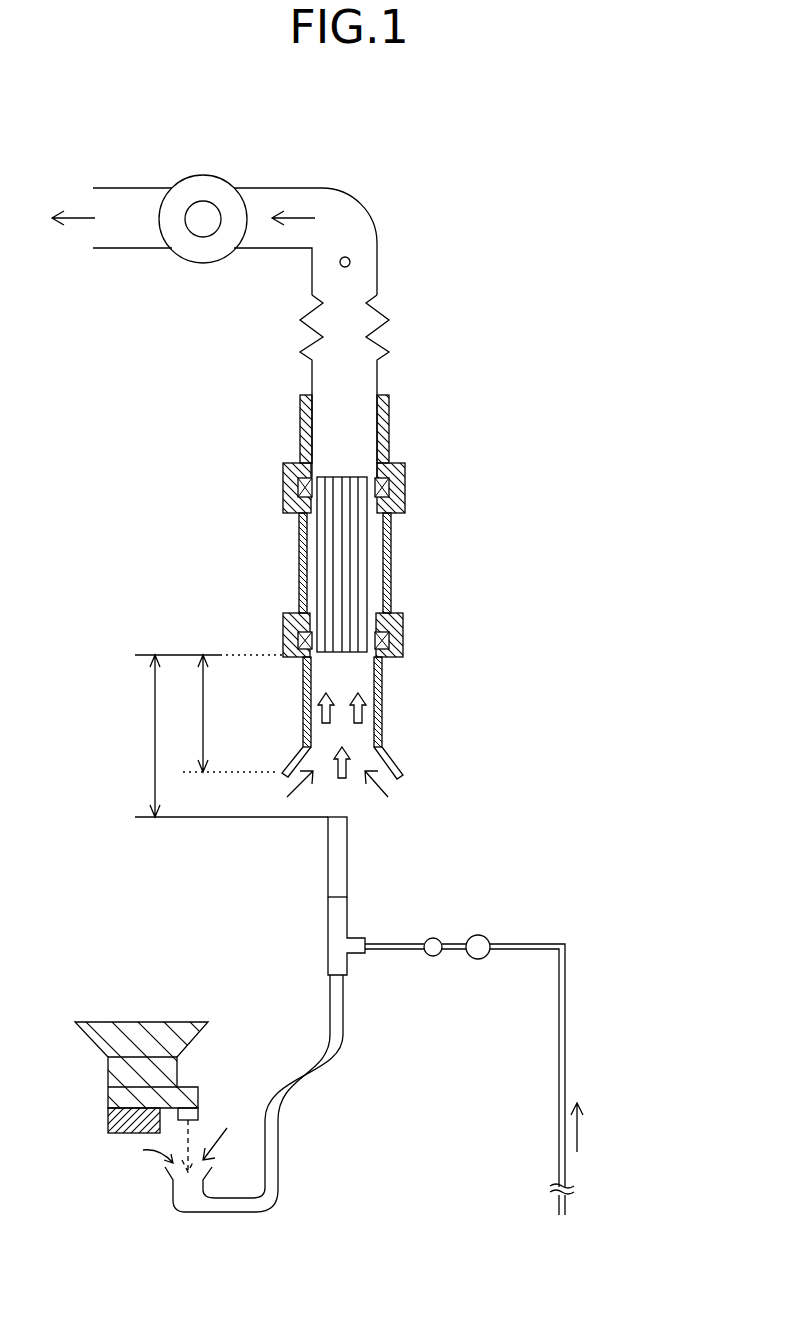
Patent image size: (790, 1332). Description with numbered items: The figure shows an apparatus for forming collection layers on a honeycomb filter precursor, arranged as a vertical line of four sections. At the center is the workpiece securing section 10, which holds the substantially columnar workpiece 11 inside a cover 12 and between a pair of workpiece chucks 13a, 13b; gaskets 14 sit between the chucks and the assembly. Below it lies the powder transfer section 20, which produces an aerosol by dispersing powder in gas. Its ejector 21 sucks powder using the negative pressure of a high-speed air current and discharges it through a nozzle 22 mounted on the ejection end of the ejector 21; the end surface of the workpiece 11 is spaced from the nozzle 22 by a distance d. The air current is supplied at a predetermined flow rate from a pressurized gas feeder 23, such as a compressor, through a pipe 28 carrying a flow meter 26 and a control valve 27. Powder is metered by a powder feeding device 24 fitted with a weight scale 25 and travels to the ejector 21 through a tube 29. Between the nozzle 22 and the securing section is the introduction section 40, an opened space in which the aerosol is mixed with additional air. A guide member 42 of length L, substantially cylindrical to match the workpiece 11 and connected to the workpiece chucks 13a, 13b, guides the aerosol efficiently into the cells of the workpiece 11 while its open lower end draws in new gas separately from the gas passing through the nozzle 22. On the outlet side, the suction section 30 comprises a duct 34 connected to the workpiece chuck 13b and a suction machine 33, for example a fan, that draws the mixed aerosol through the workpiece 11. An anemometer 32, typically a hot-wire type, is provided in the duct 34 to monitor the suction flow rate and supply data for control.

The workpiece securing section 10 is at (640, 465).
The workpiece 11 is at (318, 556).
The cover 12 is at (391, 543).
The workpiece chuck 13a is at (403, 645).
The workpiece chuck 13b is at (405, 493).
The gasket 14 is at (283, 485).
The powder transfer section 20 is at (640, 818).
The ejector 21 is at (347, 968).
The nozzle 22 is at (347, 850).
The pressurized gas feeder 23 is at (560, 1231).
The powder feeding device 24 is at (142, 1022).
The weight scale 25 is at (117, 1133).
The flow meter 26 is at (433, 938).
The control valve 27 is at (478, 935).
The pipe 28 is at (559, 1047).
The tube 29 is at (292, 1085).
The suction section 30 is at (640, 178).
The anemometer 32 is at (348, 257).
The suction machine 33 is at (202, 264).
The duct 34 is at (322, 188).
The introduction section 40 is at (640, 655).
The guide member 42 is at (303, 683).